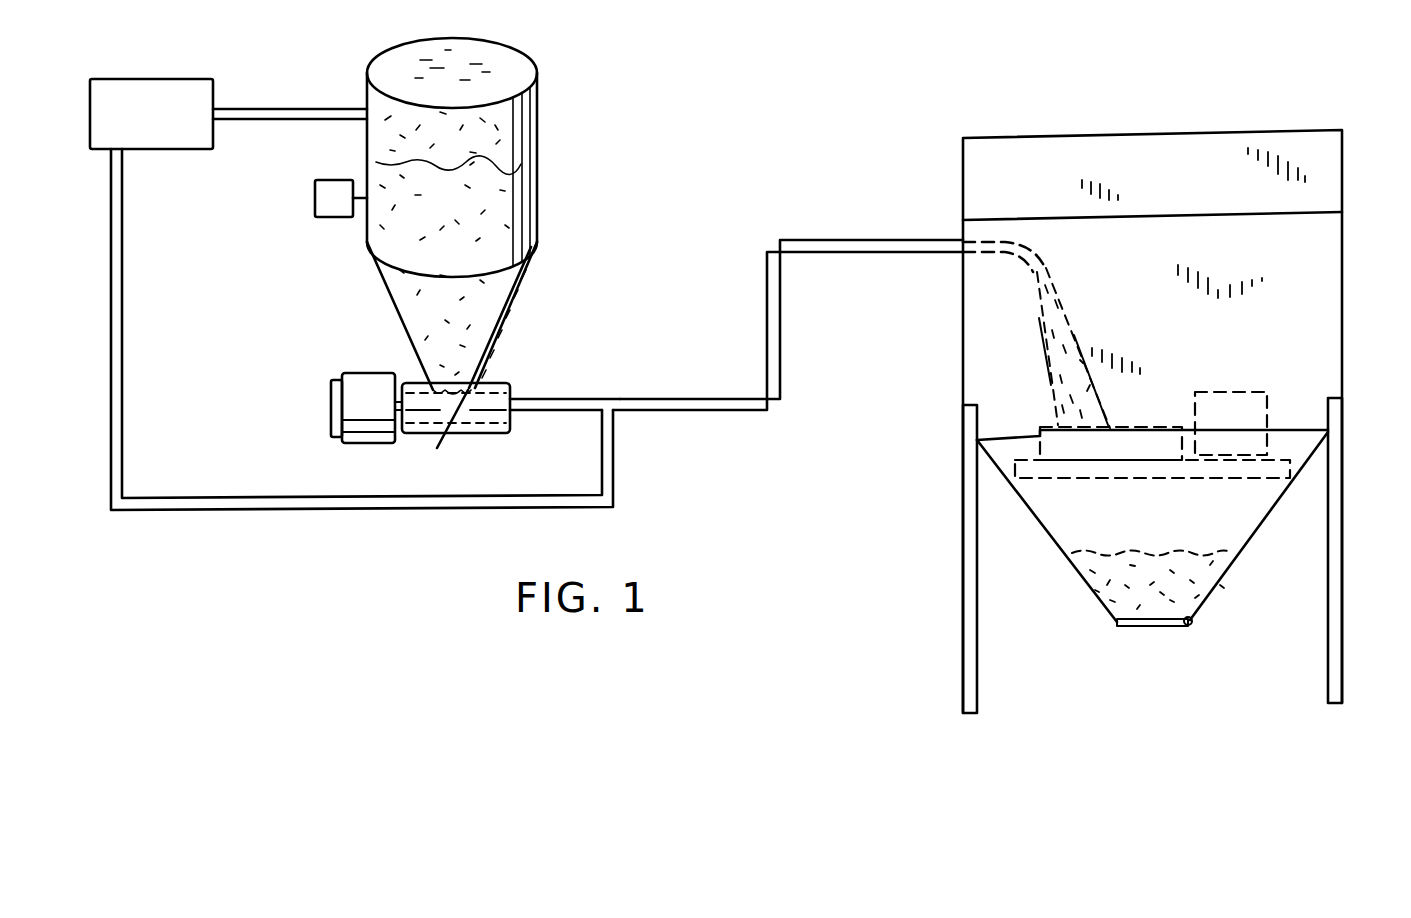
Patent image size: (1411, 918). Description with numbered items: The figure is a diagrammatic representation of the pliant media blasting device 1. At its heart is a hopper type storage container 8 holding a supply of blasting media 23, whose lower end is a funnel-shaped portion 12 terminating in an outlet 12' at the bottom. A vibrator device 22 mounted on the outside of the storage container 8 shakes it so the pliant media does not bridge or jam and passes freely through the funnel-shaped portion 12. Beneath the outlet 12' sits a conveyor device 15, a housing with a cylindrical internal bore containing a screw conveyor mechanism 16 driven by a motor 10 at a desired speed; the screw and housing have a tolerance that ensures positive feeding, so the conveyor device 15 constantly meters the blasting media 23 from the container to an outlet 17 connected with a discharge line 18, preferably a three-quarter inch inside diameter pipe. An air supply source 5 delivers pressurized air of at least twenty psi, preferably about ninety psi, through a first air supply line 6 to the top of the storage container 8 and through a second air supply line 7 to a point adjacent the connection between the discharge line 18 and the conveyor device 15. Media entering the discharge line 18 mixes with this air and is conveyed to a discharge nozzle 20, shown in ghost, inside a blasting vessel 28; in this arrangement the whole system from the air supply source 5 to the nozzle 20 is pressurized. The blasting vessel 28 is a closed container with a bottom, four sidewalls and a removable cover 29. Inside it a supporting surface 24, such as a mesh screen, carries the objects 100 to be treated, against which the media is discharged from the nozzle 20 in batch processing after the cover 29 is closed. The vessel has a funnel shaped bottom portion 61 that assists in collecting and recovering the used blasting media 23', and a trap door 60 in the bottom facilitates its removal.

The pliant media blasting device 1 is at (588, 93).
The air supply source 5 is at (133, 82).
The first air supply line 6 is at (312, 107).
The second air supply line 7 is at (268, 512).
The storage container 8 is at (538, 182).
The motor 10 is at (368, 372).
The funnel-shaped portion 12 is at (478, 318).
The outlet 12' is at (442, 437).
The conveyor device 15 is at (506, 385).
The screw conveyor mechanism 16 is at (488, 422).
The outlet 17 is at (532, 400).
The discharge line 18 is at (666, 411).
The discharge nozzle 20 is at (1012, 256).
The vibrator device 22 is at (313, 194).
The blasting media 23 is at (445, 203).
The used blasting media 23' is at (1136, 607).
The supporting surface 24 is at (1284, 462).
The blasting vessel 28 is at (1346, 262).
The removable cover 29 is at (1066, 137).
The trap door 60 is at (1158, 627).
The funnel shaped bottom portion 61 is at (1232, 553).
The objects 100 is at (1040, 438).